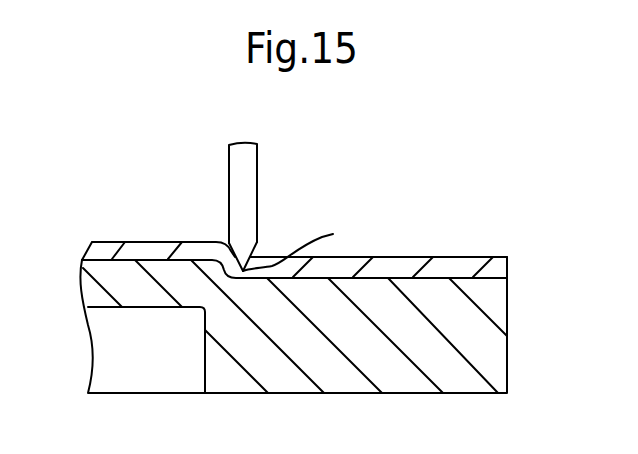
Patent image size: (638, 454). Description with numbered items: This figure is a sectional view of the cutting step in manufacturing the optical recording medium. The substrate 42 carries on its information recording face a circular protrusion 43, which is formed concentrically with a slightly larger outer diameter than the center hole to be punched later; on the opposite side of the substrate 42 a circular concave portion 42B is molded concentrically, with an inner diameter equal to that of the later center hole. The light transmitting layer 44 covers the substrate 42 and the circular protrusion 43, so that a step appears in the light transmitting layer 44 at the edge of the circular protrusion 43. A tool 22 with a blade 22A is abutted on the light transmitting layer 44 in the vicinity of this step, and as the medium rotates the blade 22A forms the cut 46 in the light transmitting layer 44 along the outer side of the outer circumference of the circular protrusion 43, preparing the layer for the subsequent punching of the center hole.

The tool 22 is at (257, 172).
The blade 22A is at (256, 246).
The substrate 42 is at (507, 337).
The circular concave portion 42B is at (205, 360).
The circular protrusion 43 is at (125, 265).
The light transmitting layer 44 is at (413, 258).
The cut 46 is at (304, 246).